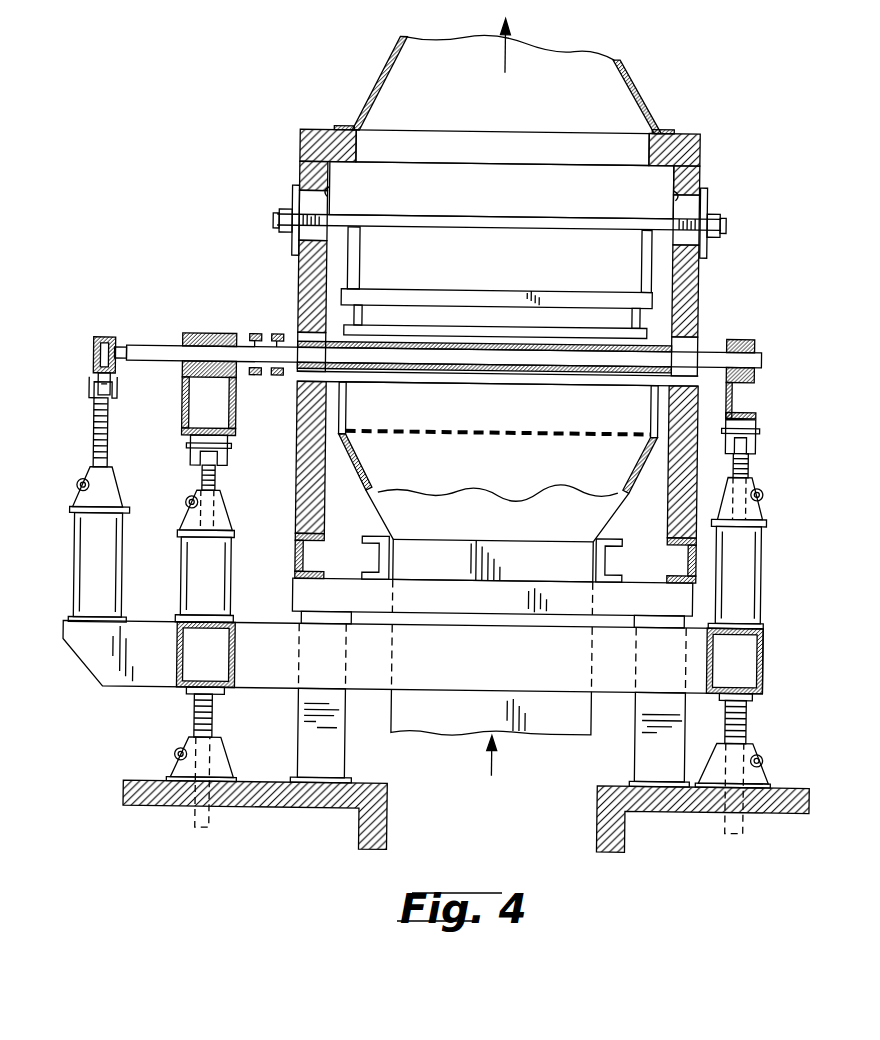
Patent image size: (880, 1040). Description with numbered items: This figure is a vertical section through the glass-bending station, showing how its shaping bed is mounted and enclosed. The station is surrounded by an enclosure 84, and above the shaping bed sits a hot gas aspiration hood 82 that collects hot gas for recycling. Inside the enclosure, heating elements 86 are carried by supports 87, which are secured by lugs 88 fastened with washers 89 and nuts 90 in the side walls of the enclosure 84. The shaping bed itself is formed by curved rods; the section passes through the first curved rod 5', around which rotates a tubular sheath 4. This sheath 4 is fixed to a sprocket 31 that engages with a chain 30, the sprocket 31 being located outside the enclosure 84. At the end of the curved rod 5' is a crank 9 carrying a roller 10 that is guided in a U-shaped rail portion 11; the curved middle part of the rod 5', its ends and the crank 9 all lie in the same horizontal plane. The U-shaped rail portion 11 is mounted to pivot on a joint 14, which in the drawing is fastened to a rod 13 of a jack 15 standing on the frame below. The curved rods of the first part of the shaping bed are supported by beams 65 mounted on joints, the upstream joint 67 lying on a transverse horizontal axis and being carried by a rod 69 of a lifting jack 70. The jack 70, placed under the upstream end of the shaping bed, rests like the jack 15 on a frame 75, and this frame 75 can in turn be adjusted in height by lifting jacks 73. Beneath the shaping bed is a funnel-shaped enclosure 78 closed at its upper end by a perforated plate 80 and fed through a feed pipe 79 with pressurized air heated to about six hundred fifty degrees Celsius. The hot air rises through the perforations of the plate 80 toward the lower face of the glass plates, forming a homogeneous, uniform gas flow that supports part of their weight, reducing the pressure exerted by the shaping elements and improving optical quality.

The tubular sheath 4 is at (403, 343).
The first curved rod 5' is at (484, 313).
The crank 9 is at (127, 351).
The roller 10 is at (103, 342).
The U-shaped rail portion 11 is at (92, 347).
The threaded spindle 13 is at (108, 439).
The joint 14 is at (114, 384).
The lifting jack 15 is at (113, 488).
The chain 30 is at (276, 334).
The sprocket 31 is at (254, 378).
The beams 65 is at (186, 417).
The upstream joint 67 is at (227, 449).
The rod 69 is at (215, 482).
The lifting jack 70 is at (222, 518).
The lifting jacks 73 is at (224, 759).
The frame 75 is at (233, 670).
The funnel-shaped enclosure 78 is at (394, 520).
The feed pipe 79 is at (442, 726).
The perforated plate 80 is at (490, 435).
The hot gas aspiration hood 82 is at (626, 92).
The enclosure 84 is at (305, 284).
The heating elements 86 is at (497, 332).
The supports 87 is at (509, 216).
The lugs 88 is at (326, 197).
The washers 89 is at (290, 190).
The nuts 90 is at (285, 234).